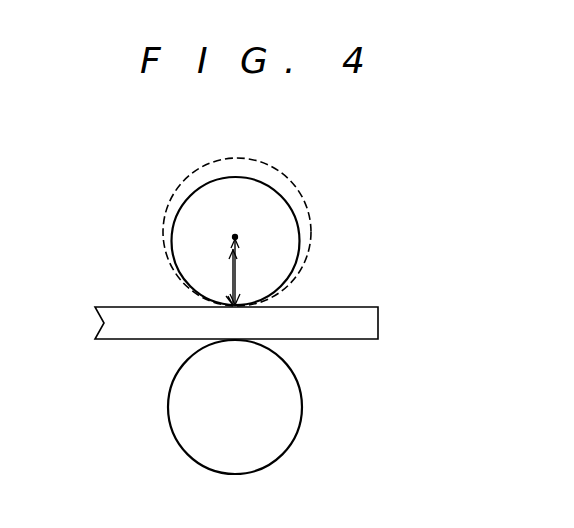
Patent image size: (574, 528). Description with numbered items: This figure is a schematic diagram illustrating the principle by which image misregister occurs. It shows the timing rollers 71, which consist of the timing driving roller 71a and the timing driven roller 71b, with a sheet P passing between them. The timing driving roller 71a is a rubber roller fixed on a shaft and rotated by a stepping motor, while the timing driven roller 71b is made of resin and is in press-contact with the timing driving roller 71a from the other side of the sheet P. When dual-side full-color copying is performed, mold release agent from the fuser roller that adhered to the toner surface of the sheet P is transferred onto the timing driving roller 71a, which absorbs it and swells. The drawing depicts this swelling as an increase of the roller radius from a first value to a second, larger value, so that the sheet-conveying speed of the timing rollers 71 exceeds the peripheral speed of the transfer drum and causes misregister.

The timing rollers 71 is at (323, 288).
The timing driving roller 71a is at (283, 197).
The timing driven roller 71b is at (298, 425).
The sheet P is at (348, 307).